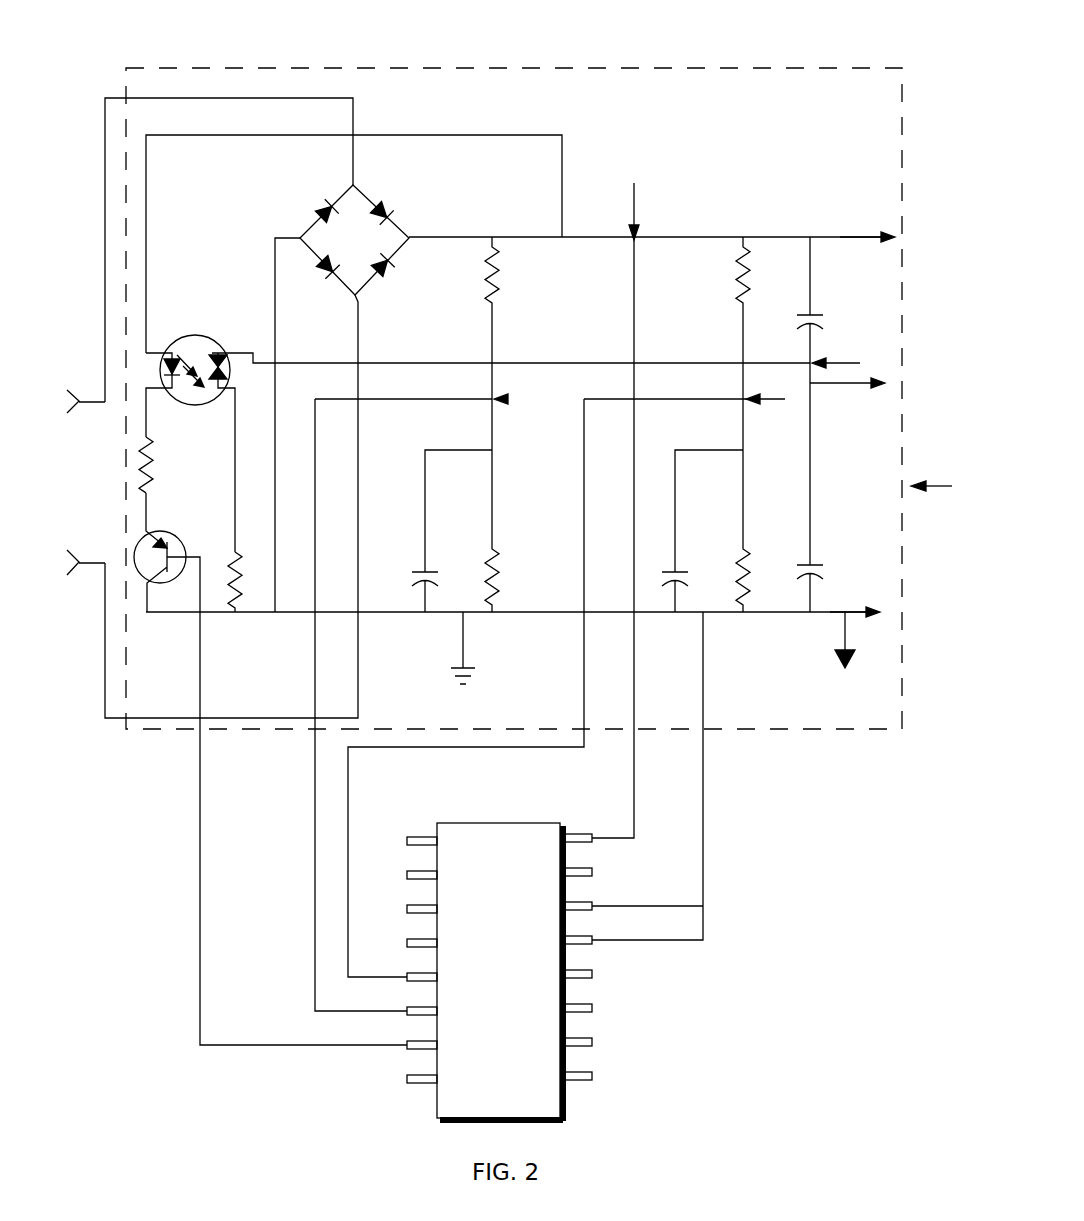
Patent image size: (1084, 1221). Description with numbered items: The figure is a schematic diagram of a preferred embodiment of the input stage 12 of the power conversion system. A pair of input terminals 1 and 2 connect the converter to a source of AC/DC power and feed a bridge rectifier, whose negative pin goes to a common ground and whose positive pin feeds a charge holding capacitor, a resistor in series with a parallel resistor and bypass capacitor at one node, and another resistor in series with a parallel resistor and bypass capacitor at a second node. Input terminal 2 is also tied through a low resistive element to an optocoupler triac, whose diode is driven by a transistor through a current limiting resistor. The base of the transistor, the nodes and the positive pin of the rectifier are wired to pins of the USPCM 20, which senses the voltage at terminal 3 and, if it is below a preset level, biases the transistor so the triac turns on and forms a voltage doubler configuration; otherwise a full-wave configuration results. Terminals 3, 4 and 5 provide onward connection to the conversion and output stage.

The input stage 12 is at (601, 68).
The USPCM universal serial power control module 20 is at (618, 1062).
The input terminal 1 is at (86, 395).
The input terminal 2 is at (86, 571).
The terminal 3 is at (867, 224).
The terminal 4 is at (847, 392).
The terminal 5 is at (855, 599).